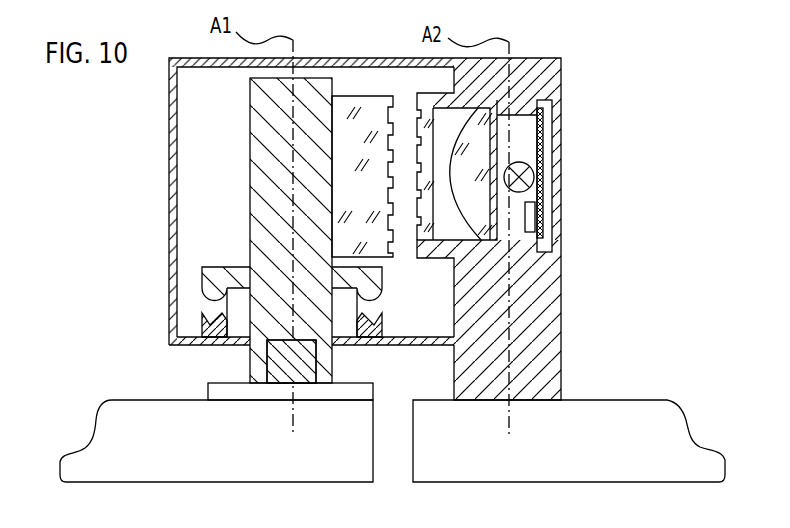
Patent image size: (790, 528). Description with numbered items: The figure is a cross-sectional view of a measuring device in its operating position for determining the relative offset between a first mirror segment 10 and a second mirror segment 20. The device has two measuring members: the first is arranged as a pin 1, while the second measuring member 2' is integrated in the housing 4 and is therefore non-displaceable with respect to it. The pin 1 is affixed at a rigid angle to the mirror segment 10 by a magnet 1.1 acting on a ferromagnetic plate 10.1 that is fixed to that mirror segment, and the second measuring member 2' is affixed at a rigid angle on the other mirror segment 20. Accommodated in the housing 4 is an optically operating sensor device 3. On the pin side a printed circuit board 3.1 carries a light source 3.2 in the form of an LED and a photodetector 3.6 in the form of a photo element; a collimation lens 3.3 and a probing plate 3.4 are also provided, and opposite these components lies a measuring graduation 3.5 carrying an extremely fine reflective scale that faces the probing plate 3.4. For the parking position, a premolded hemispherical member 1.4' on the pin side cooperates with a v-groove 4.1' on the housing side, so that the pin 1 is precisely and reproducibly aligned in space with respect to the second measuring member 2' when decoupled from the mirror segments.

The first pin 1 is at (250, 93).
The magnet 1.1 is at (272, 372).
The hemispherical member 1.4' is at (253, 311).
The second measuring member 2' is at (504, 229).
The sensor device 3 is at (552, 176).
The printed circuit board 3.1 is at (543, 122).
The light source 3.2 is at (532, 183).
The collimation lens 3.3 is at (478, 204).
The probing plate 3.4 is at (424, 96).
The measuring graduation 3.5 is at (370, 204).
The photodetector 3.6 is at (531, 223).
The housing 4 is at (169, 110).
The v-groove 4.1' is at (253, 325).
The first mirror segment 10 is at (355, 454).
The ferromagnetic plate 10.1 is at (359, 393).
The second mirror segment 20 is at (450, 454).